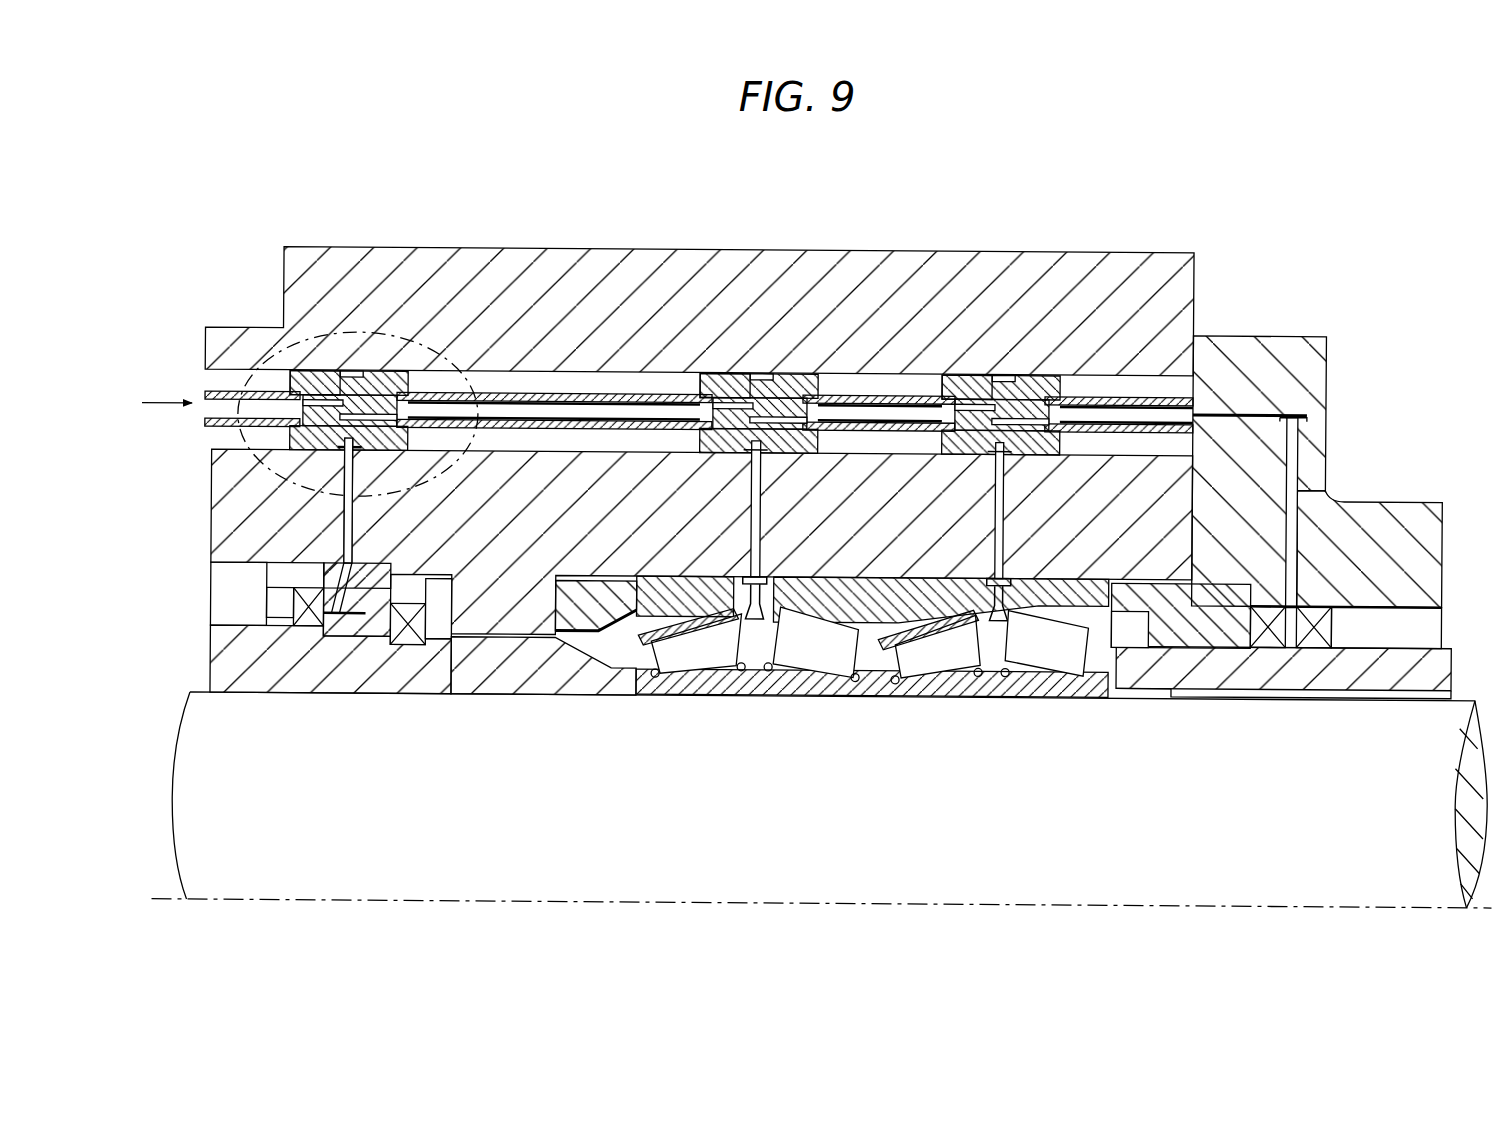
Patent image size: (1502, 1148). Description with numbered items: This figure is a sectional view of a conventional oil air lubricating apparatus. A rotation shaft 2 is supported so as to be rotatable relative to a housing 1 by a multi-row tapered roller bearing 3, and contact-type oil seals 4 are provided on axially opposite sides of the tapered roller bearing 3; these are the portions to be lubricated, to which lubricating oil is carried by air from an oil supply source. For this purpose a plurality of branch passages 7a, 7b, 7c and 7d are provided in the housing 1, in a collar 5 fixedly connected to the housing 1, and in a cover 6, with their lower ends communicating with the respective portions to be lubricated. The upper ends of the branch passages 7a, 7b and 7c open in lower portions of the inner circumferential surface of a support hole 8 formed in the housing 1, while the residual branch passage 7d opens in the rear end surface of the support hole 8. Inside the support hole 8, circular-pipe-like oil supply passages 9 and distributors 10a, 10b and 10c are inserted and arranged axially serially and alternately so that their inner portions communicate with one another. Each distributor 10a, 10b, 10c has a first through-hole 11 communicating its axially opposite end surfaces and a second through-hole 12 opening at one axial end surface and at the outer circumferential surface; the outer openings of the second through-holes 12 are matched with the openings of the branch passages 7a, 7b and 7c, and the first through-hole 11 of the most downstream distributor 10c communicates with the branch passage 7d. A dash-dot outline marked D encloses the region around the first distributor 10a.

The housing 1 is at (1160, 272).
The rotation shaft 2 is at (833, 864).
The multi-row tapered roller bearing 3 is at (878, 706).
The contact-type oil seal 4 is at (375, 695).
The collar 5 is at (240, 492).
The cover 6 is at (1386, 526).
The branch passage 7a is at (355, 505).
The branch passage 7b is at (762, 514).
The branch passage 7c is at (1003, 520).
The branch passage 7d is at (1295, 440).
The support hole 8 is at (1170, 378).
The circular-pipe-like oil supply passage 9 is at (240, 392).
The distributor 10a is at (378, 388).
The distributor 10b is at (790, 388).
The distributor 10c is at (1032, 388).
The first through-hole 11 is at (330, 385).
The second through-hole 12 is at (320, 470).
The detail region D is at (458, 270).